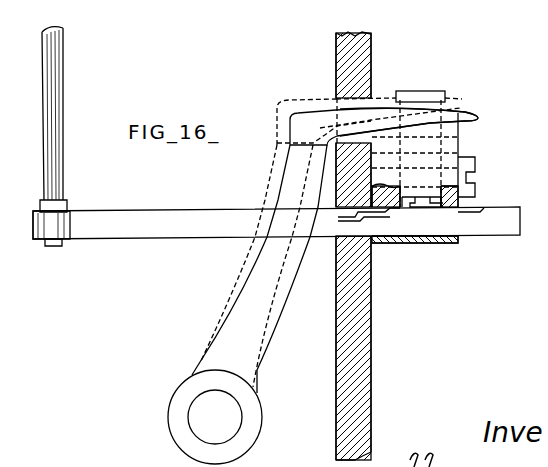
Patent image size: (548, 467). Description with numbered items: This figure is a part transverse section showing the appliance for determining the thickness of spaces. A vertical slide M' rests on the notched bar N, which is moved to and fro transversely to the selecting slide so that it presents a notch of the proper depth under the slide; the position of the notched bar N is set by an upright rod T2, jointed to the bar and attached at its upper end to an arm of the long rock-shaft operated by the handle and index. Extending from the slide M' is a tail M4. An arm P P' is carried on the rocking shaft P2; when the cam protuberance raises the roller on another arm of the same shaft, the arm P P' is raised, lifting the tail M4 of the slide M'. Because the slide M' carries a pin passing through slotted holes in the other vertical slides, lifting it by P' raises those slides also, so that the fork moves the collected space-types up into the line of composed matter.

The frame standard A is at (364, 246).
The notched bar N is at (276, 223).
The upright rod T2 is at (45, 127).
The vertical slide M' is at (423, 171).
The tail of the slide M' M4 is at (399, 82).
The arm P is at (335, 246).
The arm P' is at (415, 118).
The rocking shaft P2 is at (215, 417).